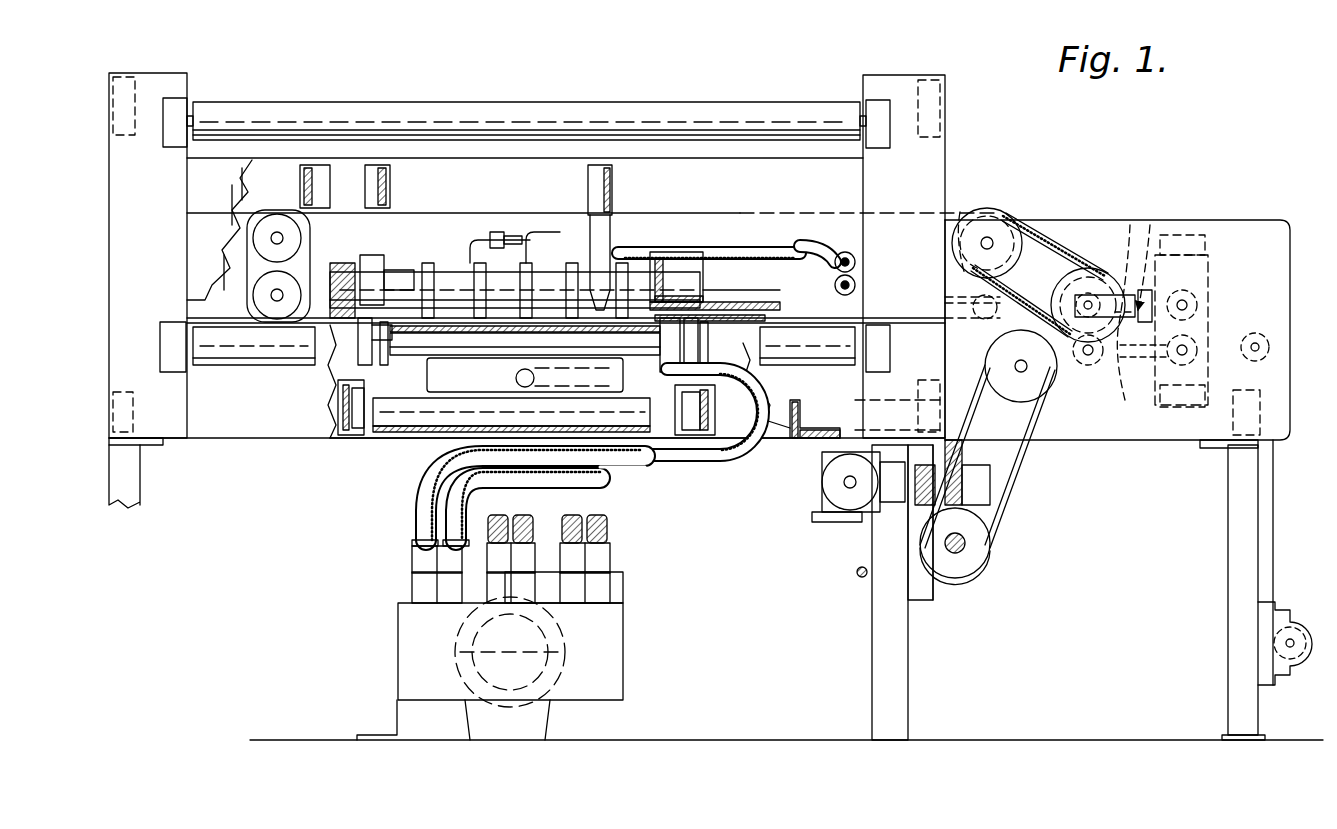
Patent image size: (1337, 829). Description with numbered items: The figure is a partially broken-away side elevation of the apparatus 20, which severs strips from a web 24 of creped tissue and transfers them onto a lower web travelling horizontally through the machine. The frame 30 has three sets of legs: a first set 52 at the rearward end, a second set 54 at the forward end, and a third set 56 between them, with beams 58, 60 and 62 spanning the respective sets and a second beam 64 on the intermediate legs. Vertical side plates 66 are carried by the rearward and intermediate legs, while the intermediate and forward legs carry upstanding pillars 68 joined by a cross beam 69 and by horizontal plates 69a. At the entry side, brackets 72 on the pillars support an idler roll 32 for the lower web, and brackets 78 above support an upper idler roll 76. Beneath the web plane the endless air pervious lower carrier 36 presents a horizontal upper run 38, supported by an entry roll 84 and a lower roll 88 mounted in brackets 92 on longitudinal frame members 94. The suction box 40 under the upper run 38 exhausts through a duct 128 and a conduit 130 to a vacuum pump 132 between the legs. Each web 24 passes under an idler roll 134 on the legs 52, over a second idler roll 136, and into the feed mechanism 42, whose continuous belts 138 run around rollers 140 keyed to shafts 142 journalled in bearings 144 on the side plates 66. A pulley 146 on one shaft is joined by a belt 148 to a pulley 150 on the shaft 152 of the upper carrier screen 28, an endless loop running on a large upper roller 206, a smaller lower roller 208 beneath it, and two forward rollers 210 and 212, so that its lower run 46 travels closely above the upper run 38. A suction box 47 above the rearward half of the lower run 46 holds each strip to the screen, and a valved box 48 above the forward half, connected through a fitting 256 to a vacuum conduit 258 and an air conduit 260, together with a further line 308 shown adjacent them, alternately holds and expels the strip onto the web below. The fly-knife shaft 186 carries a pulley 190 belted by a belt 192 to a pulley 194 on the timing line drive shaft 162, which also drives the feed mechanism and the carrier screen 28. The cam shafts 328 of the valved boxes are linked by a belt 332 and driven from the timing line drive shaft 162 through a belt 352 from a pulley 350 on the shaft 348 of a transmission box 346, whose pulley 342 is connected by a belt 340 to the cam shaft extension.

The apparatus 20 is at (1232, 175).
The web 24 is at (1322, 670).
The carrier screen 28 is at (440, 215).
The frame 30 is at (1292, 220).
The roll 32 is at (220, 360).
The lower carrier screen 36 is at (405, 440).
The upper run 38 is at (500, 334).
The vacuum box 40 is at (490, 395).
The feed mechanism 42 is at (1142, 290).
The lower run 46 is at (330, 328).
The vacuum box 47 is at (762, 265).
The valved box 48 is at (440, 262).
The first set of legs 52 is at (1228, 498).
The second set of legs 54 is at (140, 490).
The third set of legs 56 is at (872, 628).
The beam 58 is at (1262, 410).
The beam 60 is at (126, 392).
The beam 62 is at (928, 390).
The second beam 64 is at (790, 440).
The side plates 66 is at (1280, 248).
The pillar 68 is at (170, 78).
The cross beam 69 is at (124, 80).
The plates 69a is at (200, 192).
The brackets 72 is at (172, 322).
The upper idler roll 76 is at (568, 102).
The brackets 78 is at (180, 100).
The entry roll 84 is at (612, 346).
The roll 88 is at (630, 408).
The brackets 92 is at (395, 365).
The frame members 94 is at (338, 408).
The duct 128 is at (496, 377).
The conduit 130 is at (663, 464).
The vacuum pump 132 is at (623, 652).
The idler roll 134 is at (1300, 625).
The second idler roll 136 is at (1272, 328).
The continuous belts 138 is at (1132, 225).
The rollers 140 is at (1178, 292).
The shafts 142 is at (1072, 298).
The bearings 144 is at (1208, 270).
The pulley 146 is at (1110, 270).
The belt 148 is at (1070, 270).
The pulley 150 is at (994, 238).
The shaft 152 is at (1030, 212).
The timing line drive shaft 162 is at (958, 578).
The shaft 186 is at (1030, 355).
The pulley 190 is at (1002, 403).
The belt 192 is at (995, 525).
The pulley 194 is at (975, 548).
The upper roller 206 is at (956, 210).
The lower roller 208 is at (860, 300).
The roller 210 is at (283, 215).
The roller 212 is at (255, 296).
The fitting 256 is at (492, 240).
The vacuum conduit 258 is at (578, 262).
The air conduit 260 is at (522, 232).
The conduit 308 is at (528, 262).
The common shaft 328 is at (437, 255).
The belt 332 is at (350, 255).
The belt 340 is at (982, 442).
The second pulley 342 is at (985, 495).
The transmission box 346 is at (830, 500).
The second shaft 348 is at (845, 482).
The pulley 350 is at (822, 520).
The belt 352 is at (845, 540).